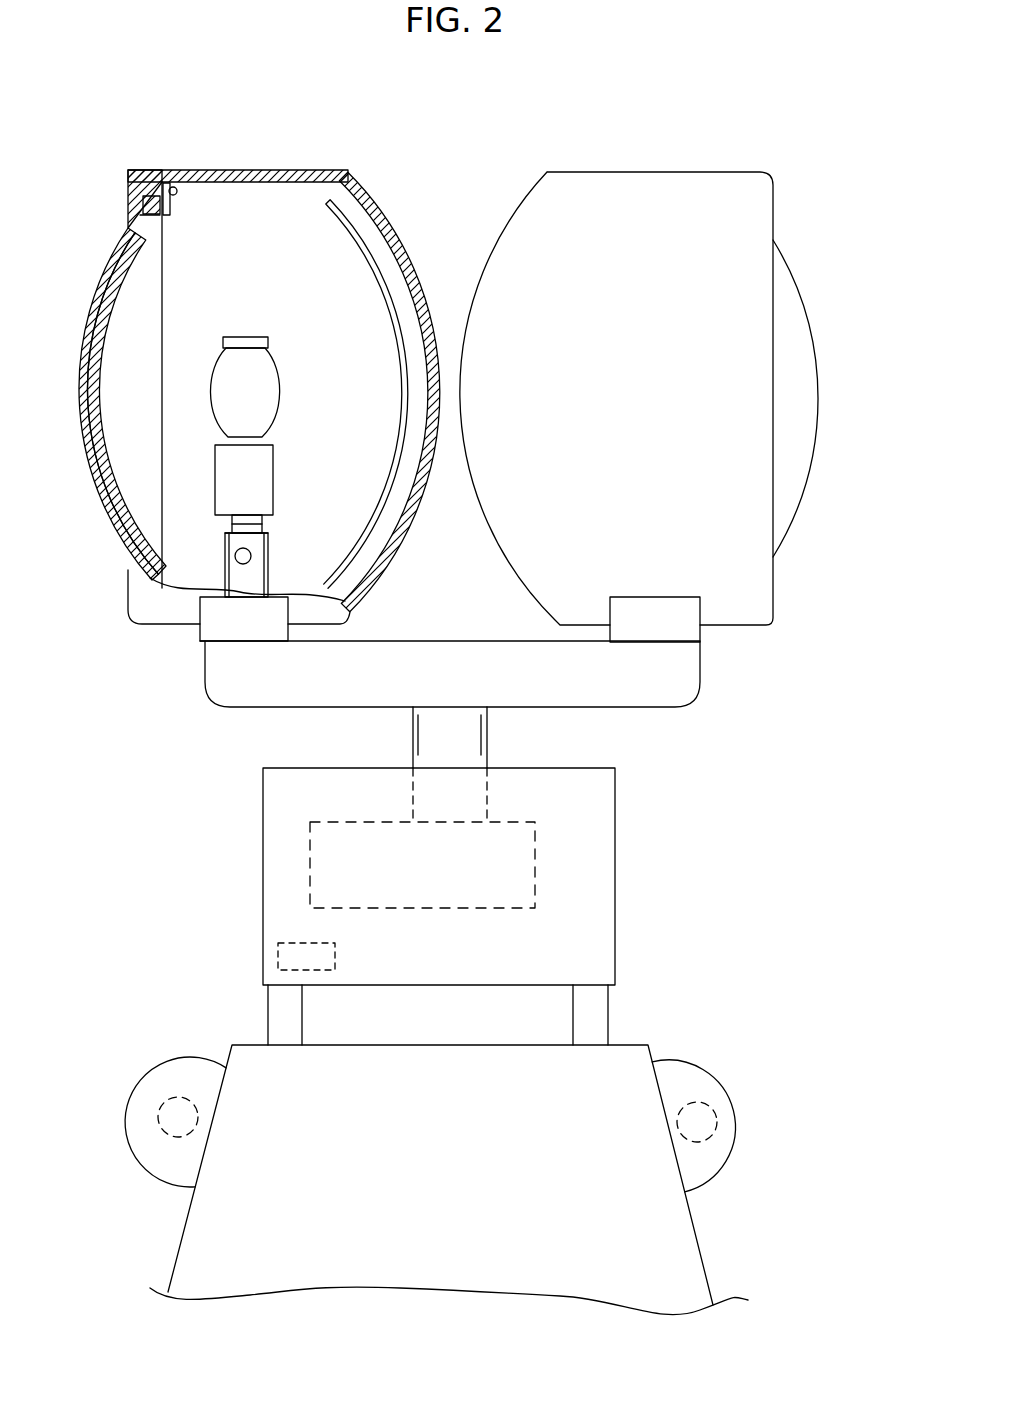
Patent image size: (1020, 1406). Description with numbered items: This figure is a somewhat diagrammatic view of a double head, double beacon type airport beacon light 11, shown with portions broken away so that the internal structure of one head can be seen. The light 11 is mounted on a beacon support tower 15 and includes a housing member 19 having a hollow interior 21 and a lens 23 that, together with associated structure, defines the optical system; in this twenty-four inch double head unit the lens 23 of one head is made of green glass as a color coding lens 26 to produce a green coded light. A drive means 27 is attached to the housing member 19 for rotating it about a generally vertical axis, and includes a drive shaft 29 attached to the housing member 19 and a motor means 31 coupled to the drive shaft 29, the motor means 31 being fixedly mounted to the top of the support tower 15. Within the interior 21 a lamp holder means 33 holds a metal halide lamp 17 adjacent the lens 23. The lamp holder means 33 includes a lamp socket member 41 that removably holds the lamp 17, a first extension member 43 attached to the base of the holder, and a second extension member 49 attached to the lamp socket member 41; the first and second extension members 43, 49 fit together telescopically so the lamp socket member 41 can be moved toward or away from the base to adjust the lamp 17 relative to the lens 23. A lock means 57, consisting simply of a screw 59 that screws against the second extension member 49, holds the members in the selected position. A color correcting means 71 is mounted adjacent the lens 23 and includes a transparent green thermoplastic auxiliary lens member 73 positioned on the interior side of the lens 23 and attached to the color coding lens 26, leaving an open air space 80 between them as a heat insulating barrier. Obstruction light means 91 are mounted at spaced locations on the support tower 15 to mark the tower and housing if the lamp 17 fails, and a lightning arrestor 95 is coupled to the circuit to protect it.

The airport beacon light 11 is at (80, 156).
The beacon support tower 15 is at (198, 1242).
The metal halide lamp 17 is at (262, 360).
The housing member 19 is at (255, 172).
The hollow interior 21 is at (242, 254).
The lens 23 is at (110, 518).
The color coding lens 26 is at (92, 472).
The drive means 27 is at (688, 892).
The drive shaft 29 is at (478, 742).
The motor means 31 is at (540, 856).
The lamp holder means 33 is at (340, 522).
The lamp socket member 41 is at (265, 470).
The first extension member 43 is at (226, 578).
The second extension member 49 is at (262, 525).
The lock means 57 is at (222, 540).
The screw 59 is at (255, 555).
The color correcting means 71 is at (150, 342).
The auxiliary lens member 73 is at (152, 420).
The open air space 80 is at (92, 338).
The obstruction light means 91 is at (160, 1070).
The lightning arrestor 95 is at (276, 954).